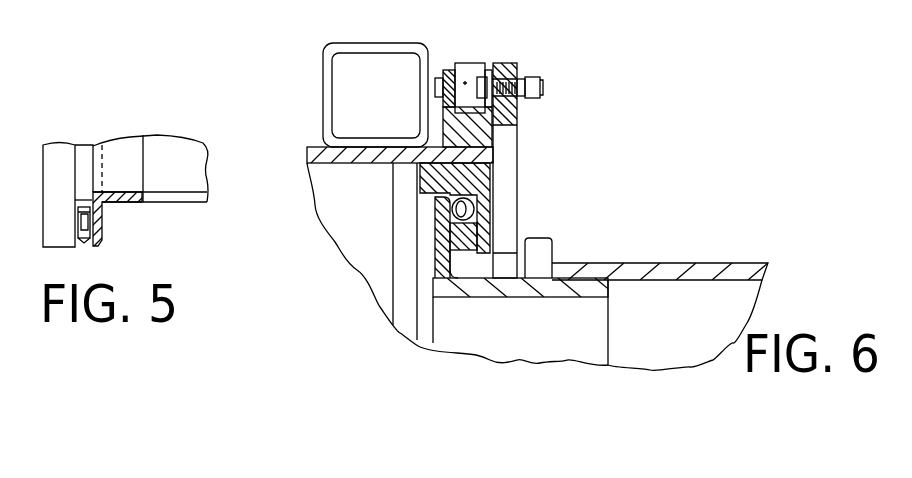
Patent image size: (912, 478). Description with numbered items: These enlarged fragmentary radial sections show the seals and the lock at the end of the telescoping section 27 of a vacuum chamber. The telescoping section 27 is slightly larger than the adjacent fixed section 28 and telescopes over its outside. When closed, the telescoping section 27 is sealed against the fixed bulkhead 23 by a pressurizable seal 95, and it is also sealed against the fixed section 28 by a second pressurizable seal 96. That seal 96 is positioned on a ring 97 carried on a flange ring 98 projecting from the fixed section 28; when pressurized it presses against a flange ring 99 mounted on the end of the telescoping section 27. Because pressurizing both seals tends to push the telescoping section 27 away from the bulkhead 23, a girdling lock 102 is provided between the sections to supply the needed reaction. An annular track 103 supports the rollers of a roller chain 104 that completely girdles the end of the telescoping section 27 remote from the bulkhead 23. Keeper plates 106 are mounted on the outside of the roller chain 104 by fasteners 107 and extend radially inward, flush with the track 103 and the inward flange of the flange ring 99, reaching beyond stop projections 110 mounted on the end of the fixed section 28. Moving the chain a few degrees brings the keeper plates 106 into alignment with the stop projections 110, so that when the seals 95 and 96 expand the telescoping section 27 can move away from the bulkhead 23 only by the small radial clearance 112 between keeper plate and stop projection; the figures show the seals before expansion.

In FIG. 5, the bulkhead 23 is at (58, 145).
In FIG. 5, the telescoping section 27 is at (173, 202).
In FIG. 6, the telescoping section 27 is at (350, 210).
In FIG. 5, the pressurizable seal 95 is at (84, 240).
In FIG. 6, the fixed section 28 is at (738, 255).
In FIG. 6, the pressurizable seal 96 is at (478, 212).
In FIG. 6, the ring 97 is at (477, 240).
In FIG. 6, the flange ring 98 is at (442, 270).
In FIG. 6, the flange ring 99 is at (488, 167).
In FIG. 6, the girdling lock 102 is at (532, 68).
In FIG. 6, the annular track 103 is at (480, 138).
In FIG. 6, the roller chain 104 is at (450, 58).
In FIG. 6, the keeper plates 106 is at (518, 153).
In FIG. 6, the fasteners 107 is at (540, 85).
In FIG. 6, the stop projections 110 is at (552, 250).
In FIG. 6, the radial clearance 112 is at (516, 266).